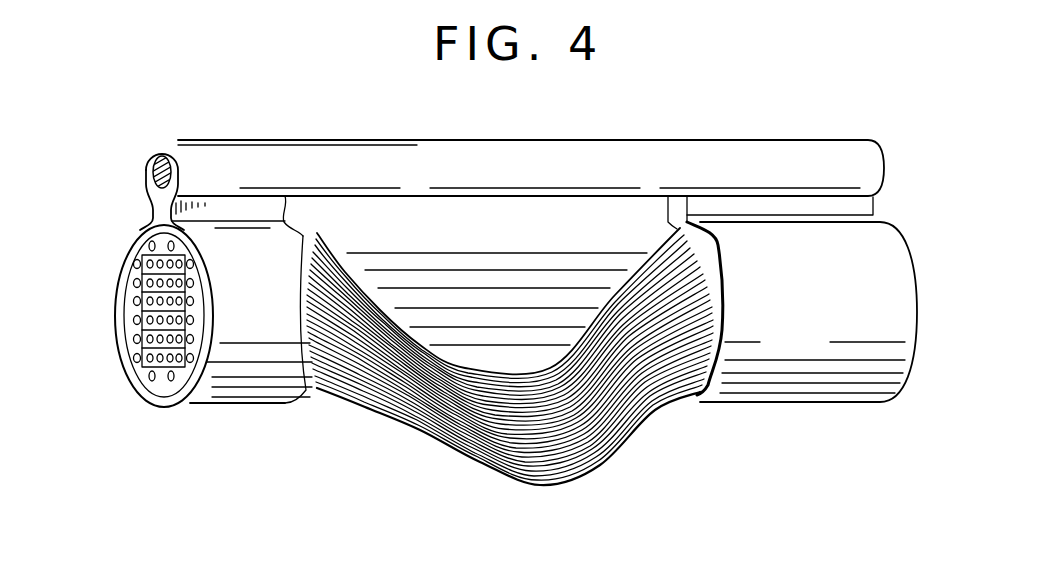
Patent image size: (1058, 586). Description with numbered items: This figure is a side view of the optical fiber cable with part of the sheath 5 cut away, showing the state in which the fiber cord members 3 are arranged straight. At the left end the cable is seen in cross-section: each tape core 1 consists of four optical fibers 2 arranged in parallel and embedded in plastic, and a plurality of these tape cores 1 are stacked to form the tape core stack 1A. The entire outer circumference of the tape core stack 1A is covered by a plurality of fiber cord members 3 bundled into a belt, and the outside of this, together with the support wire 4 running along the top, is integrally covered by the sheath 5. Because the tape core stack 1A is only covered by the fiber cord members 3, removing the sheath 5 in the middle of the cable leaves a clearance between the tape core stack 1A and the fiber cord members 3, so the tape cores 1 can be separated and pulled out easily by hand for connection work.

The tape core 1 is at (143, 383).
The tape core stack 1A is at (528, 253).
The optical fiber 2 is at (142, 263).
The fiber cord member 3 is at (478, 477).
The support wire 4 is at (147, 172).
The sheath 5 is at (687, 392).